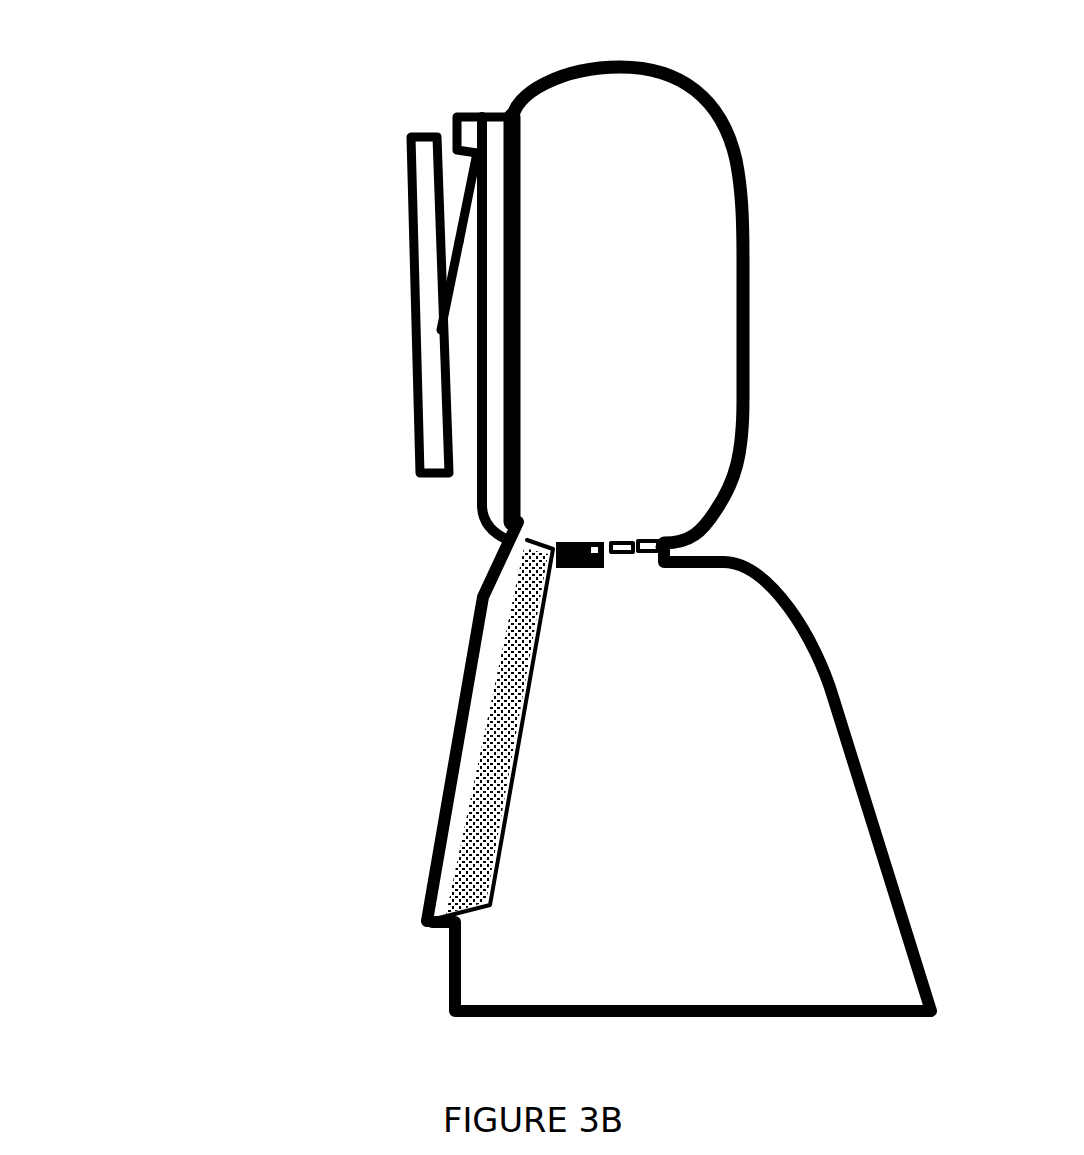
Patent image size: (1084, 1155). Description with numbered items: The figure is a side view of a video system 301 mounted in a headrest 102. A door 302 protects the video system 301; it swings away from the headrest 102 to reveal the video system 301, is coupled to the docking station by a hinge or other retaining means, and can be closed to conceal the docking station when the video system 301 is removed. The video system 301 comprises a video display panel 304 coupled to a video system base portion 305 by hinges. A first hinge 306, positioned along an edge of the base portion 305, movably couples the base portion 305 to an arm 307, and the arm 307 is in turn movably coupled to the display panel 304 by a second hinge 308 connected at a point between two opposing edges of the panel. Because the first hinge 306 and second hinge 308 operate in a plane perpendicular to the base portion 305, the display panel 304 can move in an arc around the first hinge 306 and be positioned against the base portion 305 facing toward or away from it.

The headrest 102 is at (697, 93).
The video system 301 is at (220, 88).
The door 302 is at (443, 832).
The video display panel 304 is at (413, 435).
The video system base portion 305 is at (480, 500).
The first hinge 306 is at (457, 122).
The arm 307 is at (453, 208).
The second hinge 308 is at (447, 307).